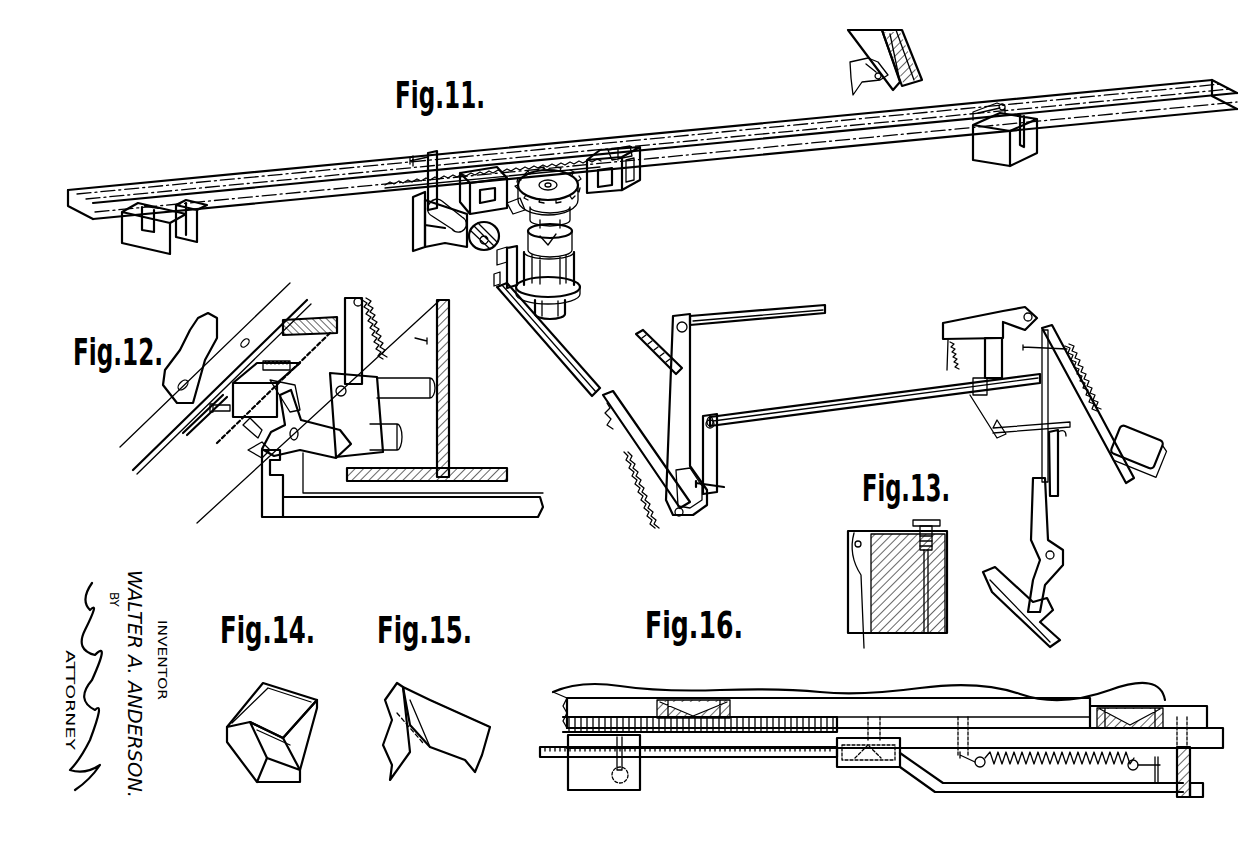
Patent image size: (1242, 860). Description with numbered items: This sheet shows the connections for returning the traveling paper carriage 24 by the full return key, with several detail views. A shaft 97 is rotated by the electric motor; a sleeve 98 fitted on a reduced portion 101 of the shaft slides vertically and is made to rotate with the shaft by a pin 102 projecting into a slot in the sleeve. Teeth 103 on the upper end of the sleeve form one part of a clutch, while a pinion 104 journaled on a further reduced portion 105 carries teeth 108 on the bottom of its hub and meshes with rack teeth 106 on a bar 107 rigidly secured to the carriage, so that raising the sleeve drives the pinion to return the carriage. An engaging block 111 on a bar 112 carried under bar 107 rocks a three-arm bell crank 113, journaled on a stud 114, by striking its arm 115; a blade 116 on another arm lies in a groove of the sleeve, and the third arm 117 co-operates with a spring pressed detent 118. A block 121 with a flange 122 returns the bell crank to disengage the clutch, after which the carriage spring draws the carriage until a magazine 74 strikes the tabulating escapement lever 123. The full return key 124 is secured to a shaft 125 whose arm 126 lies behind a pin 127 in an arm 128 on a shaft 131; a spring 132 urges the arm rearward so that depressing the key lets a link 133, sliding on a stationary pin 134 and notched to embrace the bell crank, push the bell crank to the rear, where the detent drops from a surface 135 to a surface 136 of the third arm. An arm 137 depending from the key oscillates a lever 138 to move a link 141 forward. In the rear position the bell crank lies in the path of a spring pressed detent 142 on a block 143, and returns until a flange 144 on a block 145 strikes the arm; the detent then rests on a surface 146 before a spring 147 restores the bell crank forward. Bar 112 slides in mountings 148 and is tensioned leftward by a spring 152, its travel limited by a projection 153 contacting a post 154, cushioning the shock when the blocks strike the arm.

In FIG. 12, the traveling paper carriage 24 is at (212, 328).
In FIG. 16, the traveling paper carriage 24 is at (1100, 706).
In FIG. 11, the magazine 74 is at (890, 85).
In FIG. 11, the shaft 97 is at (553, 312).
In FIG. 11, the sleeve 98 is at (575, 284).
In FIG. 11, the reduced portion 101 is at (562, 233).
In FIG. 11, the pin 102 is at (572, 262).
In FIG. 11, the teeth 103 is at (575, 247).
In FIG. 11, the pinion 104 is at (570, 195).
In FIG. 11, the further reduced portion 105 is at (560, 178).
In FIG. 11, the rack teeth 106 is at (530, 170).
In FIG. 12, the rack teeth 106 is at (290, 370).
In FIG. 16, the rack teeth 106 is at (745, 717).
In FIG. 12, the bar 107 is at (300, 312).
In FIG. 16, the bar 107 is at (925, 728).
In FIG. 11, the teeth 108 is at (560, 223).
In FIG. 11, the engaging block 111 is at (1018, 156).
In FIG. 16, the engaging block 111 is at (600, 790).
In FIG. 11, the bar 112 is at (410, 178).
In FIG. 12, the bar 112 is at (200, 452).
In FIG. 16, the bar 112 is at (688, 769).
In FIG. 11, the three-arm bell crank 113 is at (475, 245).
In FIG. 11, the stud 114 is at (495, 257).
In FIG. 11, the arm 115 is at (515, 202).
In FIG. 12, the arm 115 is at (276, 400).
In FIG. 11, the blade 116 is at (506, 300).
In FIG. 12, the blade 116 is at (250, 470).
In FIG. 11, the third arm 117 is at (445, 248).
In FIG. 12, the third arm 117 is at (330, 458).
In FIG. 14, the third arm 117 is at (310, 760).
In FIG. 15, the third arm 117 is at (465, 730).
In FIG. 11, the spring pressed detent 118 is at (415, 225).
In FIG. 12, the spring pressed detent 118 is at (380, 398).
In FIG. 15, the spring pressed detent 118 is at (410, 768).
In FIG. 11, the block 121 is at (450, 158).
In FIG. 12, the block 121 is at (250, 440).
In FIG. 11, the flange 122 is at (490, 168).
In FIG. 12, the flange 122 is at (290, 395).
In FIG. 11, the tabulating escapement lever 123 is at (856, 70).
In FIG. 11, the full return key 124 is at (1132, 430).
In FIG. 11, the shaft 125 is at (814, 391).
In FIG. 11, the arm 126 is at (715, 460).
In FIG. 11, the pin 127 is at (718, 482).
In FIG. 11, the arm 128 is at (675, 410).
In FIG. 11, the shaft 131 is at (770, 310).
In FIG. 11, the spring 132 is at (650, 351).
In FIG. 11, the link 133 is at (570, 357).
In FIG. 12, the link 133 is at (497, 520).
In FIG. 11, the stationary pin 134 is at (495, 279).
In FIG. 12, the stationary pin 134 is at (275, 516).
In FIG. 14, the surface 135 is at (250, 755).
In FIG. 14, the surface 136 is at (303, 765).
In FIG. 11, the arm 137 is at (1057, 470).
In FIG. 11, the lever 138 is at (1033, 498).
In FIG. 11, the link 141 is at (1008, 614).
In FIG. 11, the spring pressed detent 142 is at (620, 186).
In FIG. 13, the spring pressed detent 142 is at (864, 638).
In FIG. 11, the block 143 is at (612, 140).
In FIG. 13, the block 143 is at (922, 632).
In FIG. 11, the flange 144 is at (178, 244).
In FIG. 11, the block 145 is at (138, 240).
In FIG. 14, the surface 146 is at (300, 695).
In FIG. 11, the spring 147 is at (639, 482).
In FIG. 16, the mounting 148 is at (860, 765).
In FIG. 16, the spring 152 is at (1040, 775).
In FIG. 16, the projection 153 is at (1195, 795).
In FIG. 16, the post 154 is at (1184, 760).